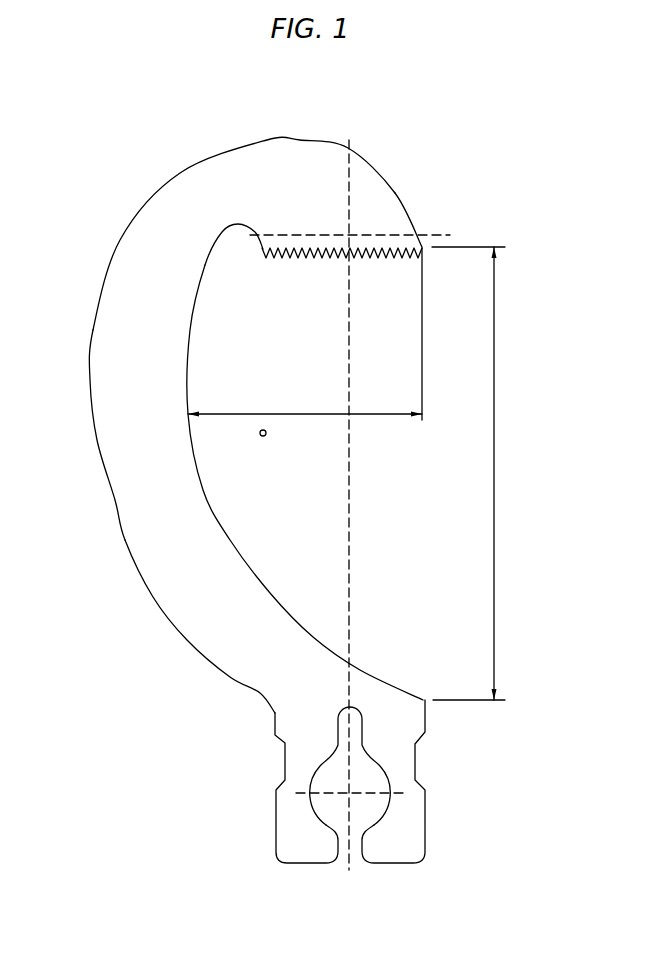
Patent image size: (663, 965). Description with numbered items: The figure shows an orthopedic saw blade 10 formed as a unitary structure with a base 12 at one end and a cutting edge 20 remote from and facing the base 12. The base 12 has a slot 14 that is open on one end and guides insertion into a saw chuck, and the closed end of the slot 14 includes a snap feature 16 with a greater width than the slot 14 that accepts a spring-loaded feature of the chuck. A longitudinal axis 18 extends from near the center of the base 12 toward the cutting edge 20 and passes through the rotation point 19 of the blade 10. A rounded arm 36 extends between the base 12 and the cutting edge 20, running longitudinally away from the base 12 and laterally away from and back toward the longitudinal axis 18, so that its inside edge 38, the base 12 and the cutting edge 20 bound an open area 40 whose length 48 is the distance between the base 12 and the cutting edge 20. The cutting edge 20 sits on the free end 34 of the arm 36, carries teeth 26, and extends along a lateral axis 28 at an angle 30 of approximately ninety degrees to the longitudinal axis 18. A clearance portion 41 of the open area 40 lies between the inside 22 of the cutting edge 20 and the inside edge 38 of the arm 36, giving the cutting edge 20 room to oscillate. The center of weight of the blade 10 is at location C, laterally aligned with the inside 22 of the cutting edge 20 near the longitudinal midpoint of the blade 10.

The saw blade 10 is at (129, 158).
The base 12 is at (447, 815).
The slot 14 is at (344, 865).
The snap feature 16 is at (363, 778).
The longitudinal axis 18 is at (349, 625).
The rotation point 19 is at (350, 793).
The cutting edge 20 is at (301, 270).
The inside of cutting edge 22 is at (262, 259).
The teeth 26 is at (318, 259).
The lateral axis of cutting edge 28 is at (425, 234).
The angle 30 is at (377, 238).
The free end of arm 34 is at (370, 190).
The arm 36 is at (95, 366).
The inside edge of arm 38 is at (238, 547).
The open area 40 is at (382, 470).
The clearance portion 41 is at (246, 252).
The length of open area 48 is at (495, 473).
The center of weight location C is at (266, 436).